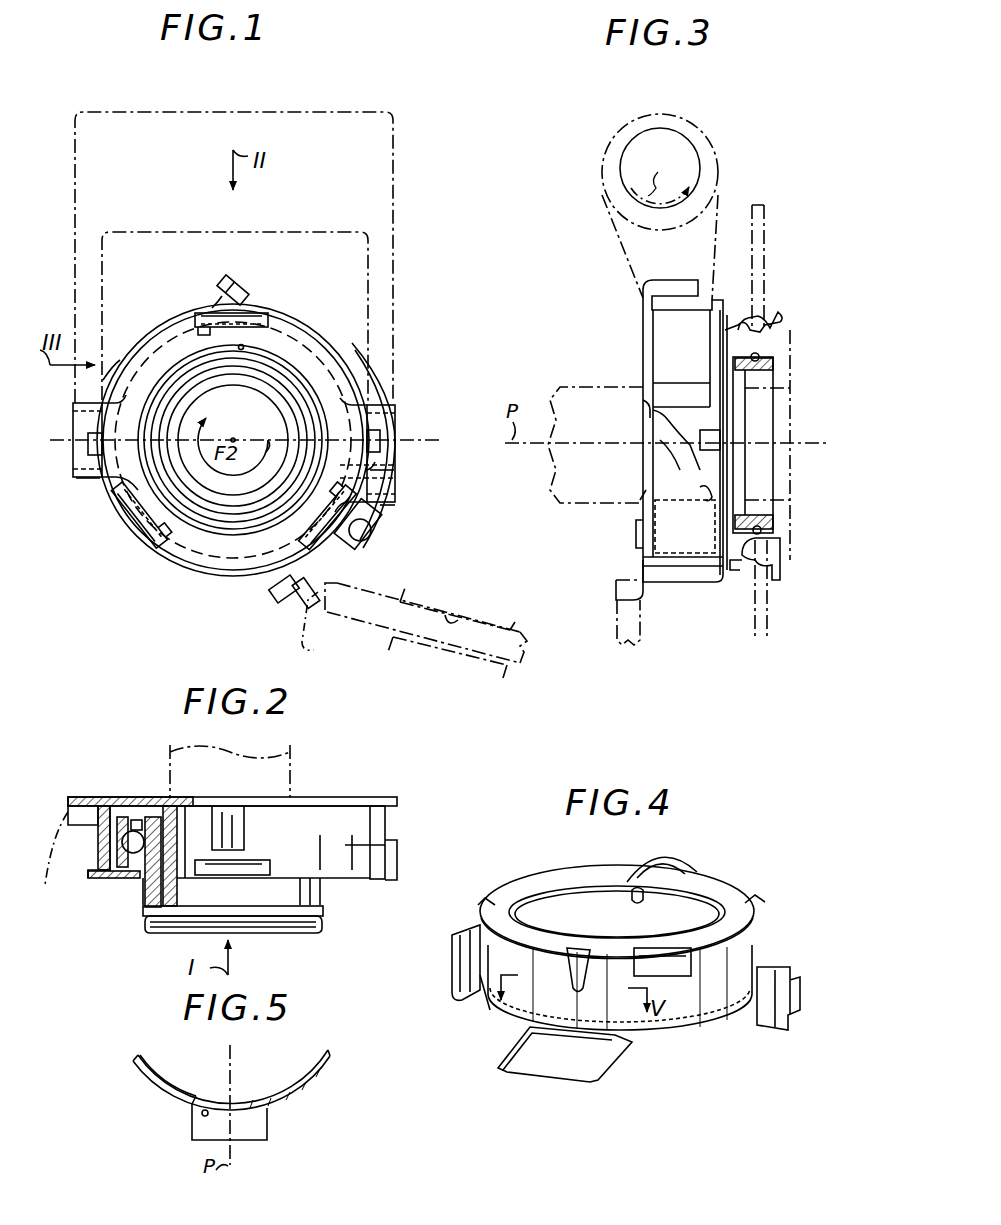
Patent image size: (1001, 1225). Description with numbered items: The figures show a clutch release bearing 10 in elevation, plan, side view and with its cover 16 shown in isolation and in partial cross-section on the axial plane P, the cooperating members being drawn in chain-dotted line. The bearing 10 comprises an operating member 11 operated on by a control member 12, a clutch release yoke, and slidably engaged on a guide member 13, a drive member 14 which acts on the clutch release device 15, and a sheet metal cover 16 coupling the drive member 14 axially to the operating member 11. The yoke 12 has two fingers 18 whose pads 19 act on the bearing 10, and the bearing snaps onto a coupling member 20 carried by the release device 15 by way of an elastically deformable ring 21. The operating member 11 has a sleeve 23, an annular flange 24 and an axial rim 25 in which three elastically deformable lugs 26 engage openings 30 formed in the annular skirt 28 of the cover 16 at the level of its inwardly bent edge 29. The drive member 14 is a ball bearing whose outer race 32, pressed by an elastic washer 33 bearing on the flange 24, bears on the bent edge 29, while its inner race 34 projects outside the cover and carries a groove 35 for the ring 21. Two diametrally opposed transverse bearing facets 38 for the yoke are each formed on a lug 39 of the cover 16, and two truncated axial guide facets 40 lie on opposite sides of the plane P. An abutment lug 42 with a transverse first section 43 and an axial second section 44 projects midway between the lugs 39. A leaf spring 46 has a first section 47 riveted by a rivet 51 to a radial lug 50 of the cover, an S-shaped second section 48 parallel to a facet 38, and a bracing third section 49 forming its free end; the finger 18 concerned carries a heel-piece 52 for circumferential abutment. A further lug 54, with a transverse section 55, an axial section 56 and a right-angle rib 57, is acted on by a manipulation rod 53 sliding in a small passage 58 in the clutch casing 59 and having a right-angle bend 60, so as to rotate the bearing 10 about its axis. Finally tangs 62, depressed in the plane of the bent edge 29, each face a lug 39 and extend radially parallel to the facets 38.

In FIG. 1, the clutch release bearing 10 is at (296, 302).
In FIG. 2, the operating member 11 is at (88, 800).
In FIG. 1, the control member 12 is at (404, 165).
In FIG. 3, the control member 12 is at (600, 172).
In FIG. 2, the control member 12 is at (66, 868).
In FIG. 3, the guide member 13 is at (568, 385).
In FIG. 2, the guide member 13 is at (296, 775).
In FIG. 1, the drive member 14 is at (298, 348).
In FIG. 3, the drive member 14 is at (778, 548).
In FIG. 2, the drive member 14 is at (140, 893).
In FIG. 3, the clutch release device 15 is at (770, 255).
In FIG. 3, the cover 16 is at (708, 585).
In FIG. 2, the cover 16 is at (190, 900).
In FIG. 4, the cover 16 is at (768, 915).
In FIG. 5, the cover 16 is at (150, 1090).
In FIG. 1, the fingers 18 is at (85, 300).
In FIG. 3, the fingers 18 is at (722, 192).
In FIG. 2, the fingers 18 is at (68, 808).
In FIG. 1, the pads 19 is at (88, 478).
In FIG. 3, the pads 19 is at (642, 508).
In FIG. 3, the coupling member 20 is at (785, 330).
In FIG. 1, the elastically deformable ring 21 is at (241, 351).
In FIG. 3, the elastically deformable ring 21 is at (762, 356).
In FIG. 2, the elastically deformable ring 21 is at (318, 930).
In FIG. 2, the sleeve 23 is at (175, 810).
In FIG. 2, the annular flange 24 is at (142, 820).
In FIG. 2, the axial rim 25 is at (100, 860).
In FIG. 1, the elastically deformable lugs 26 is at (255, 312).
In FIG. 3, the elastically deformable lugs 26 is at (712, 525).
In FIG. 2, the elastically deformable lugs 26 is at (230, 876).
In FIG. 3, the annular skirt 28 is at (680, 553).
In FIG. 2, the annular skirt 28 is at (335, 852).
In FIG. 4, the annular skirt 28 is at (622, 939).
In FIG. 5, the annular skirt 28 is at (316, 1082).
In FIG. 1, the bent edge 29 is at (250, 564).
In FIG. 4, the bent edge 29 is at (535, 890).
In FIG. 1, the openings 30 is at (203, 333).
In FIG. 3, the openings 30 is at (702, 490).
In FIG. 2, the openings 30 is at (270, 862).
In FIG. 4, the openings 30 is at (492, 902).
In FIG. 2, the outer race 32 is at (128, 880).
In FIG. 2, the elastic washer 33 is at (133, 830).
In FIG. 2, the inner race 34 is at (158, 905).
In FIG. 2, the groove 35 is at (322, 910).
In FIG. 1, the transverse bearing facets 38 is at (80, 405).
In FIG. 3, the transverse bearing facets 38 is at (660, 440).
In FIG. 4, the transverse bearing facets 38 is at (540, 1055).
In FIG. 5, the transverse bearing facets 38 is at (258, 1138).
In FIG. 1, the lugs 39 is at (74, 460).
In FIG. 3, the lugs 39 is at (638, 403).
In FIG. 4, the lugs 39 is at (495, 1062).
In FIG. 5, the lugs 39 is at (190, 1128).
In FIG. 1, the axial guide facets 40 is at (362, 466).
In FIG. 2, the axial guide facets 40 is at (104, 806).
In FIG. 4, the axial guide facets 40 is at (690, 862).
In FIG. 5, the axial guide facets 40 is at (205, 1109).
In FIG. 1, the lug 42 is at (228, 278).
In FIG. 2, the lug 42 is at (250, 795).
In FIG. 4, the lug 42 is at (452, 995).
In FIG. 1, the first section 43 is at (212, 305).
In FIG. 2, the first section 43 is at (218, 806).
In FIG. 4, the first section 43 is at (470, 1000).
In FIG. 1, the second section 44 is at (242, 283).
In FIG. 2, the second section 44 is at (246, 830).
In FIG. 4, the second section 44 is at (458, 940).
In FIG. 1, the leaf spring 46 is at (400, 504).
In FIG. 3, the leaf spring 46 is at (748, 330).
In FIG. 2, the leaf spring 46 is at (390, 860).
In FIG. 4, the leaf spring 46 is at (685, 852).
In FIG. 1, the first section 47 is at (372, 535).
In FIG. 1, the second section 48 is at (396, 478).
In FIG. 1, the third or bracing section 49 is at (358, 345).
In FIG. 3, the third or bracing section 49 is at (680, 300).
In FIG. 1, the radial lug 50 is at (340, 548).
In FIG. 1, the rivet 51 is at (366, 546).
In FIG. 3, the rivet 51 is at (636, 538).
In FIG. 3, the heel-piece 52 is at (760, 483).
In FIG. 1, the operating member 53 is at (524, 660).
In FIG. 3, the operating member 53 is at (628, 645).
In FIG. 1, the lug 54 is at (292, 604).
In FIG. 3, the lug 54 is at (645, 605).
In FIG. 4, the lug 54 is at (775, 1035).
In FIG. 1, the first section 55 is at (272, 594).
In FIG. 4, the first section 55 is at (770, 970).
In FIG. 3, the second section 56 is at (614, 596).
In FIG. 4, the second section 56 is at (792, 1020).
In FIG. 1, the right-angle rib 57 is at (305, 610).
In FIG. 4, the right-angle rib 57 is at (798, 980).
In FIG. 1, the passage 58 is at (458, 615).
In FIG. 1, the casing 59 is at (515, 628).
In FIG. 1, the right-angle bend 60 is at (320, 646).
In FIG. 1, the tangs 62 is at (102, 440).
In FIG. 3, the tangs 62 is at (720, 440).
In FIG. 2, the tangs 62 is at (110, 878).
In FIG. 4, the tangs 62 is at (640, 870).
In FIG. 1, the axial plane P is at (52, 440).